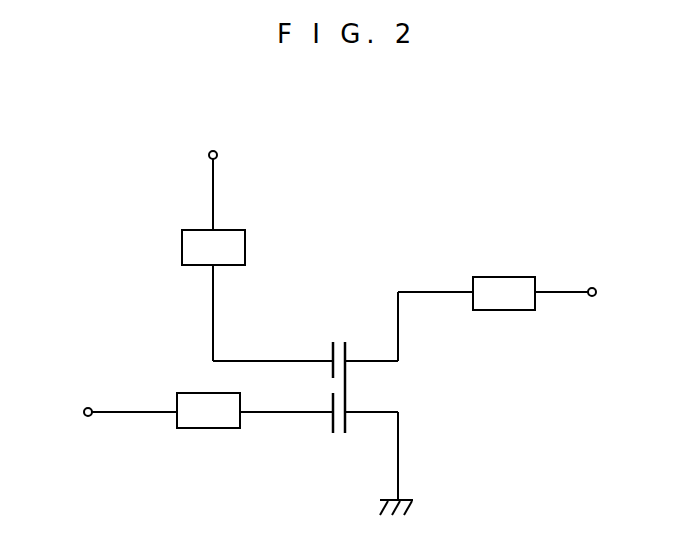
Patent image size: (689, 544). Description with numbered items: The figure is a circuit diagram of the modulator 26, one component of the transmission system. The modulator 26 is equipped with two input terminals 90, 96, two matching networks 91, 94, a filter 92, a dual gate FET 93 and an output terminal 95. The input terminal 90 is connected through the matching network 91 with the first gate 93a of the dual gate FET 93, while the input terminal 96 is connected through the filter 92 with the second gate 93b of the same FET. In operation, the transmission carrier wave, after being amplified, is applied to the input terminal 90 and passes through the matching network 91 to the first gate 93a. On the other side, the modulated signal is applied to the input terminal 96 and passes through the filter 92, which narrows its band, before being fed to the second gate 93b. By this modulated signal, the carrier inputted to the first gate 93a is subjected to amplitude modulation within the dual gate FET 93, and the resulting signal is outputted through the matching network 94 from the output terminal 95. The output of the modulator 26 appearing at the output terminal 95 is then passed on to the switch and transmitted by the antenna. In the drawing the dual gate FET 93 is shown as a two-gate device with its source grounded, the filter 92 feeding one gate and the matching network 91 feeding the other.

The modulator 26 is at (432, 212).
The input terminal 90 is at (85, 416).
The matching network 91 is at (186, 430).
The filter 92 is at (185, 266).
The dual gate FET 93 is at (311, 400).
The first gate 93a is at (328, 417).
The second gate 93b is at (329, 355).
The matching network 94 is at (497, 312).
The output terminal 95 is at (588, 296).
The input terminal 96 is at (208, 158).